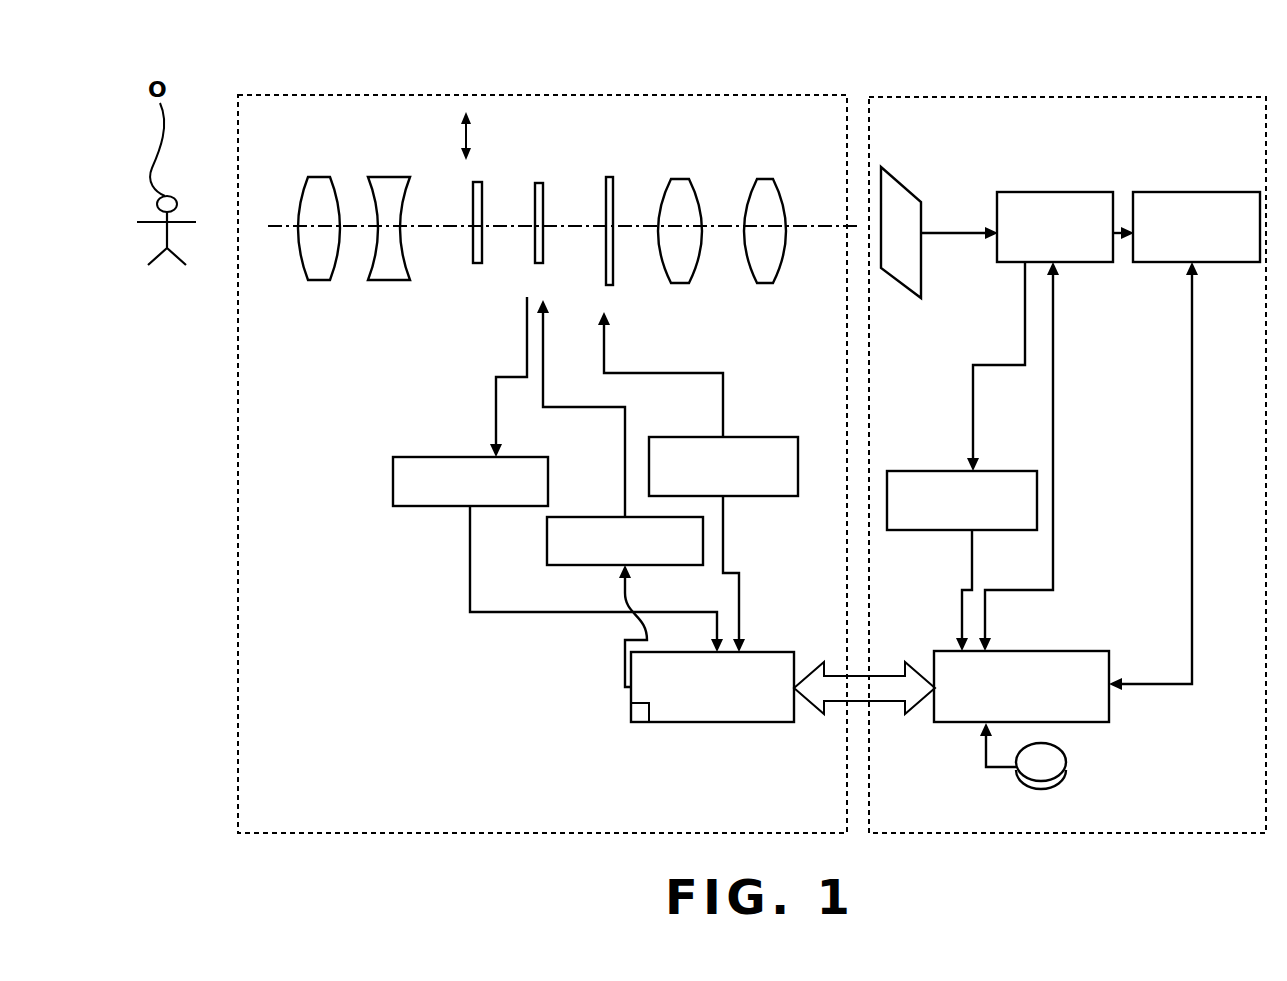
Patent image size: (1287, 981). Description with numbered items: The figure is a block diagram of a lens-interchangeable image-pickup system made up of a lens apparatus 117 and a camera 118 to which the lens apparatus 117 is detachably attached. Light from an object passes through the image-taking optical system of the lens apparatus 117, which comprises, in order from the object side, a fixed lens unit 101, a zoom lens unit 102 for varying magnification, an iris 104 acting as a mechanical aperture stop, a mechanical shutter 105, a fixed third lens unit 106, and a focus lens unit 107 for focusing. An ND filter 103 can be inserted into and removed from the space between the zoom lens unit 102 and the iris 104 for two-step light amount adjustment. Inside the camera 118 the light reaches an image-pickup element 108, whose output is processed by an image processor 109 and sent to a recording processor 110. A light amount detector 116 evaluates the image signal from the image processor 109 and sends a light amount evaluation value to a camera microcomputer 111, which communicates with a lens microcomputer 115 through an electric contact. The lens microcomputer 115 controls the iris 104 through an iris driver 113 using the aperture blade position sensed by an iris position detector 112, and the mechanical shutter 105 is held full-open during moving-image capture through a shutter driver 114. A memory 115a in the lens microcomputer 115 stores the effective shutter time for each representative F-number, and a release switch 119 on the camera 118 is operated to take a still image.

The fixed lens unit 101 is at (311, 177).
The zoom lens unit 102 is at (381, 177).
The ND filter 103 is at (475, 181).
The iris 104 is at (539, 182).
The mechanical shutter 105 is at (613, 177).
The fixed third lens unit 106 is at (672, 179).
The focus lens unit 107 is at (757, 179).
The image-pickup element 108 is at (889, 178).
The image processor 109 is at (1022, 192).
The recording processor 110 is at (1160, 192).
The camera microcomputer 111 is at (1027, 651).
The iris position detector 112 is at (404, 456).
The iris driver 113 is at (568, 517).
The shutter driver 114 is at (780, 437).
The lens microcomputer 115 is at (765, 652).
The memory 115a is at (642, 720).
The light amount detector 116 is at (909, 471).
The lens apparatus 117 is at (280, 107).
The camera 118 is at (986, 111).
The release switch 119 is at (1068, 758).